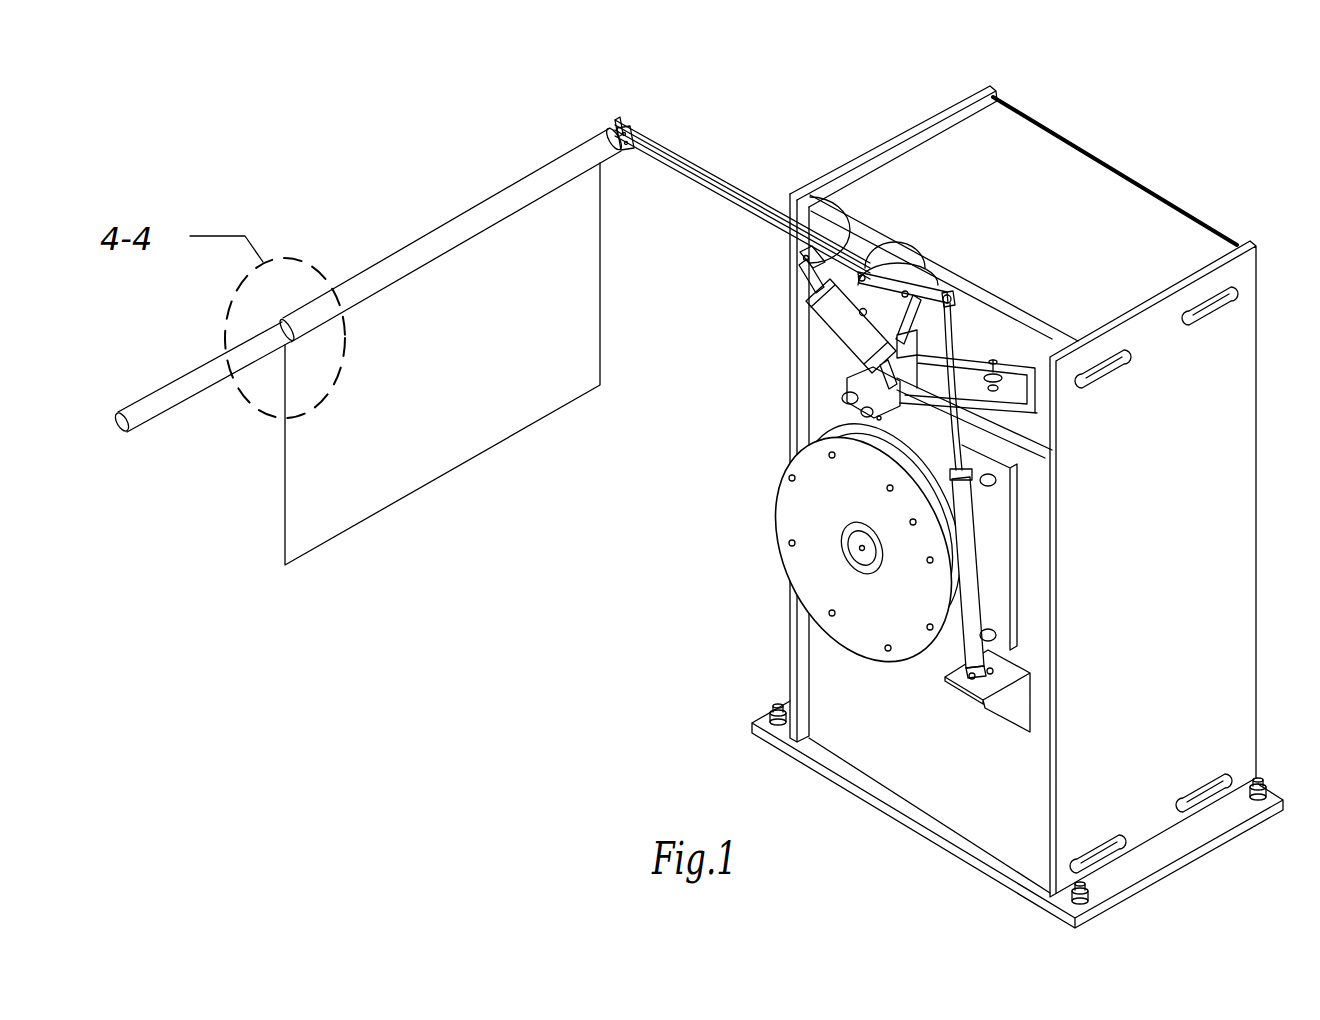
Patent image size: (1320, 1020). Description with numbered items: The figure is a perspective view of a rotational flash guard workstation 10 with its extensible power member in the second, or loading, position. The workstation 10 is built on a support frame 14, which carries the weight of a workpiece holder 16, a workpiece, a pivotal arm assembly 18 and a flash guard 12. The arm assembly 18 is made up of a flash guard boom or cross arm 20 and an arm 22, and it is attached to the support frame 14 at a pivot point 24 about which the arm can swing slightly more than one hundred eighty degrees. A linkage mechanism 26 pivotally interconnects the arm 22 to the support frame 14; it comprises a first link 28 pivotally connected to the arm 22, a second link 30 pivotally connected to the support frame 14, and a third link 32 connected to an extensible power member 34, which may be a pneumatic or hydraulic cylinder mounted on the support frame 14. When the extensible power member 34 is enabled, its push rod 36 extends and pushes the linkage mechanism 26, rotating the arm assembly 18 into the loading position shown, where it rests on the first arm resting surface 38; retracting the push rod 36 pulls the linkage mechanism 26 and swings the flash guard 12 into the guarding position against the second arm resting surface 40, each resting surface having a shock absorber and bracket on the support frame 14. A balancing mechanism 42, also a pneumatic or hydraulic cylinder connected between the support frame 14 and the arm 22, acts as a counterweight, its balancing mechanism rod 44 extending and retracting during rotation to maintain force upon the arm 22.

The workstation 10 is at (1076, 78).
The flash guard 12 is at (410, 246).
The support frame 14 is at (1232, 432).
The workpiece holder 16 is at (788, 507).
The arm assembly 18 is at (668, 99).
The cross arm 20 is at (203, 378).
The arm 22 is at (690, 160).
The pivot point 24 is at (923, 272).
The linkage mechanism 26 is at (935, 256).
The first link 28 is at (867, 260).
The second link 30 is at (913, 330).
The third link 32 is at (945, 284).
The extensible power member 34 is at (968, 525).
The push rod 36 is at (964, 432).
The first arm resting surface 38 is at (992, 358).
The second arm resting surface 40 is at (828, 193).
The balancing mechanism 42 is at (838, 325).
The balancing mechanism rod 44 is at (816, 280).